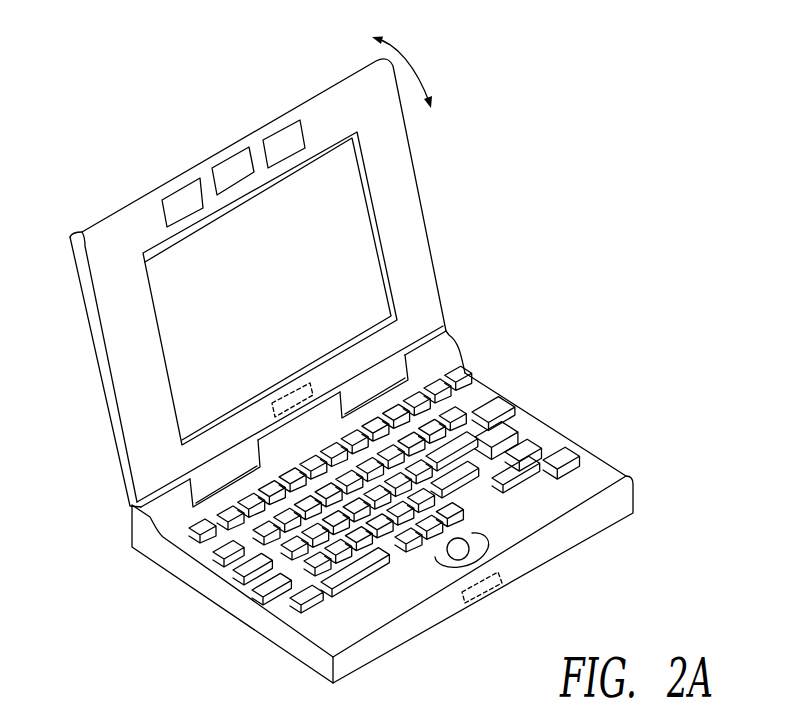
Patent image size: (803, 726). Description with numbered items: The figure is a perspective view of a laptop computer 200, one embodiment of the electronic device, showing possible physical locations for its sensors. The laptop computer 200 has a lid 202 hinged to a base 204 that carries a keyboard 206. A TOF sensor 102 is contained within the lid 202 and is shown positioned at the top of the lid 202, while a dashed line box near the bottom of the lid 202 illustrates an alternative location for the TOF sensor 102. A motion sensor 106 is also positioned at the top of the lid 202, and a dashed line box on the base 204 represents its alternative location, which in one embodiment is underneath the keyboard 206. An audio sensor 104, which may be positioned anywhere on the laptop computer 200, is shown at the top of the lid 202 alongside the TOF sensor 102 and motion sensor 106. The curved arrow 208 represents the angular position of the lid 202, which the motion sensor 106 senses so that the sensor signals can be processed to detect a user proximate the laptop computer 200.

The laptop computer 200 is at (576, 186).
The lid 202 is at (108, 212).
The base 204 is at (545, 418).
The keyboard 206 is at (482, 388).
The arrow 208 is at (411, 59).
The TOF sensor 102 is at (223, 161).
The audio sensor 104 is at (280, 138).
The motion sensor 106 is at (178, 198).